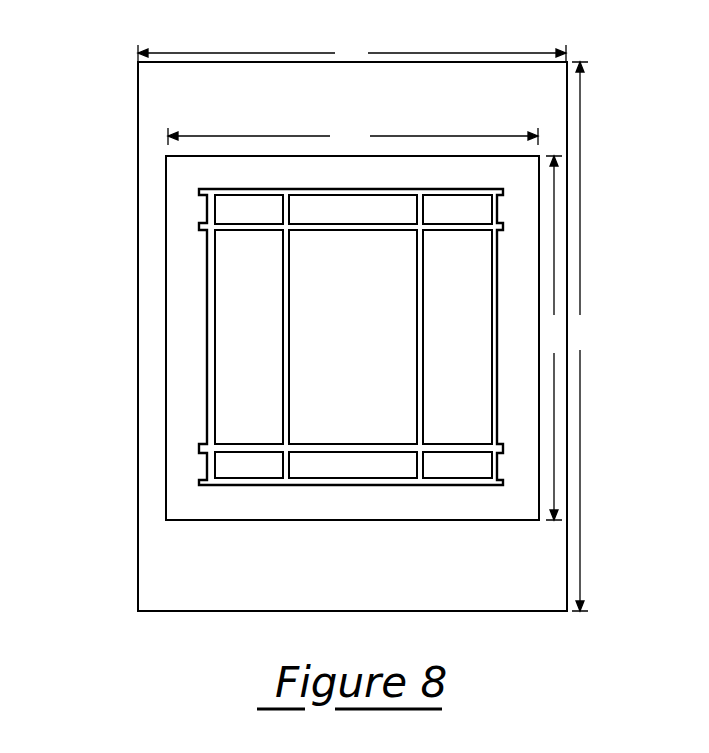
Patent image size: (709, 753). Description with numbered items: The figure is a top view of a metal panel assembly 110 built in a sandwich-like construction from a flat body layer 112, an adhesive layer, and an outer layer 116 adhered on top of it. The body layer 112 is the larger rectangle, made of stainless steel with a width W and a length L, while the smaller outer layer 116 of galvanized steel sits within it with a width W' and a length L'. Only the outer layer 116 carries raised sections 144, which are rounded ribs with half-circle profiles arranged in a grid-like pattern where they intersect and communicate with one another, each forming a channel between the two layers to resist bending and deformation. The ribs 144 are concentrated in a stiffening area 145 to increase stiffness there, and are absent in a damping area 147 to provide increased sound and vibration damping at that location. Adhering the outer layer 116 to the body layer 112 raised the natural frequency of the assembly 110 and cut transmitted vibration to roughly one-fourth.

The metal panel assembly 110 is at (637, 93).
The body layer 112 is at (163, 92).
The outer layer 116 is at (180, 503).
The raised sections 144 is at (283, 360).
The damping area 147 is at (378, 336).
The stiffening area 145 is at (478, 478).